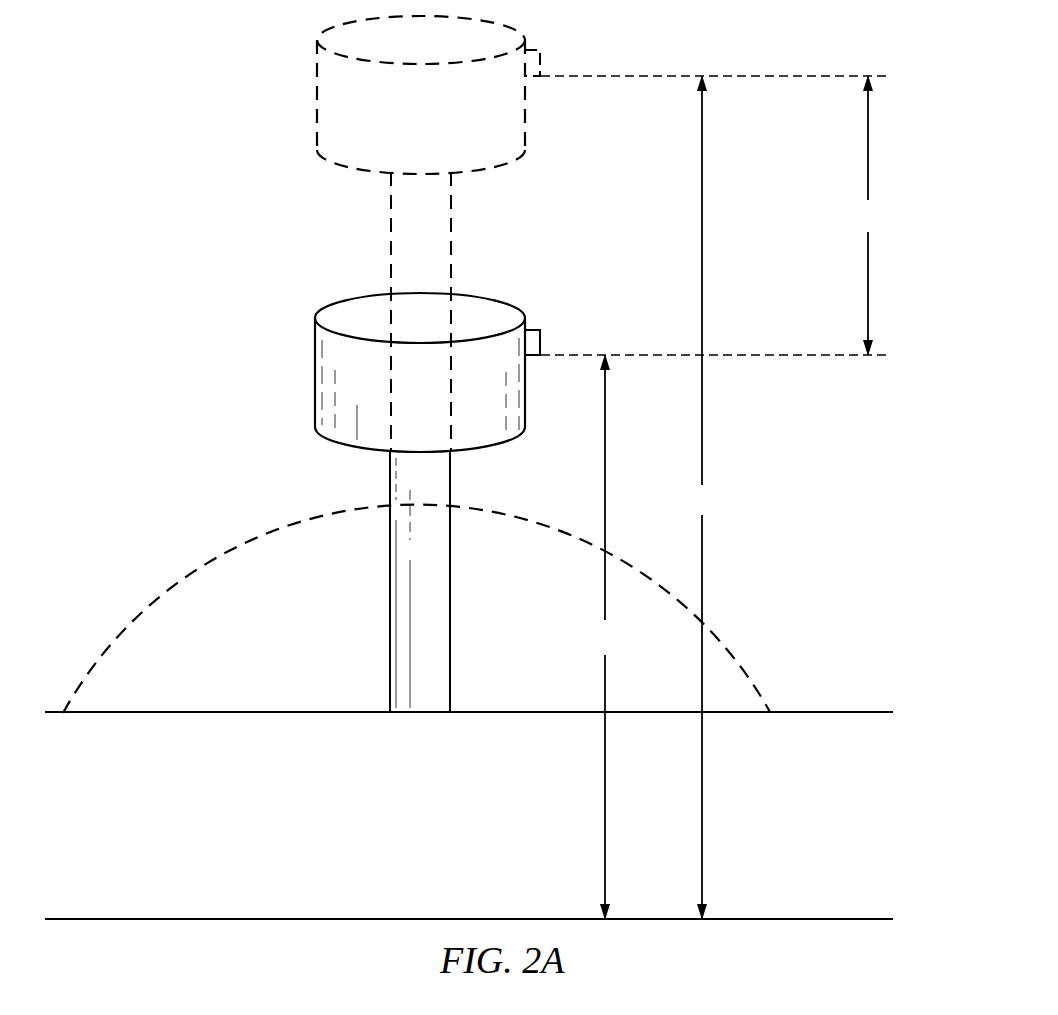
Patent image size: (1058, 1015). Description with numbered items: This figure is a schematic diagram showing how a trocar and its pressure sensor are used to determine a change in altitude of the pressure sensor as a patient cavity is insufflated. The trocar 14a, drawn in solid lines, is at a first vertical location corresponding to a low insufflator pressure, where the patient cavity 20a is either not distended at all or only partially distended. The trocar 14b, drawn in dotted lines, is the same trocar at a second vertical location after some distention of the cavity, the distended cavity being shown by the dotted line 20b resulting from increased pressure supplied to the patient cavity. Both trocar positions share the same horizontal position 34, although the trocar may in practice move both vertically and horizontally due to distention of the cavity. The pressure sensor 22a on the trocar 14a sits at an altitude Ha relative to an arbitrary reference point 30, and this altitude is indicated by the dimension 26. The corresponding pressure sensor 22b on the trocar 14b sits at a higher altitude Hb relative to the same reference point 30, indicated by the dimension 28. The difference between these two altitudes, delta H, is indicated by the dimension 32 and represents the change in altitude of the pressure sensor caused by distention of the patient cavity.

The trocar at first location 14a is at (390, 470).
The trocar at second location 14b is at (324, 228).
The patient cavity 20a is at (897, 714).
The distended patient cavity 20b is at (728, 645).
The pressure sensor on trocar at first location 22a is at (542, 340).
The pressure sensor on trocar at second location 22b is at (542, 62).
The altitude Ha 26 is at (588, 636).
The altitude Hb 28 is at (718, 494).
The reference point 30 is at (897, 921).
The altitude difference delta H 32 is at (852, 214).
The horizontal position 34 is at (420, 716).